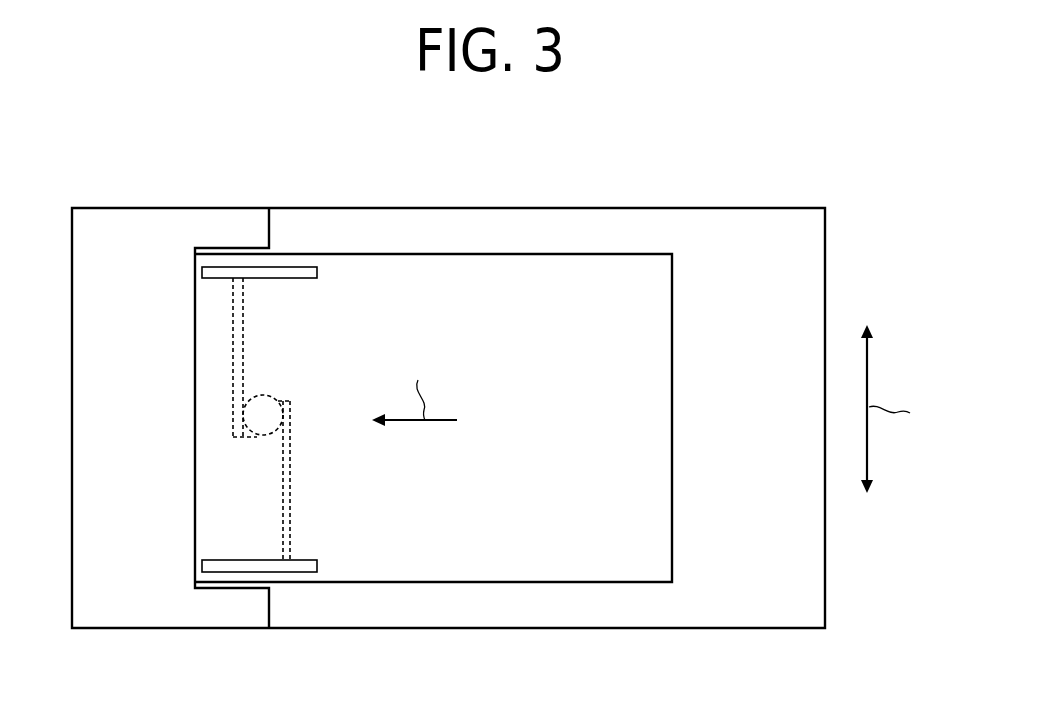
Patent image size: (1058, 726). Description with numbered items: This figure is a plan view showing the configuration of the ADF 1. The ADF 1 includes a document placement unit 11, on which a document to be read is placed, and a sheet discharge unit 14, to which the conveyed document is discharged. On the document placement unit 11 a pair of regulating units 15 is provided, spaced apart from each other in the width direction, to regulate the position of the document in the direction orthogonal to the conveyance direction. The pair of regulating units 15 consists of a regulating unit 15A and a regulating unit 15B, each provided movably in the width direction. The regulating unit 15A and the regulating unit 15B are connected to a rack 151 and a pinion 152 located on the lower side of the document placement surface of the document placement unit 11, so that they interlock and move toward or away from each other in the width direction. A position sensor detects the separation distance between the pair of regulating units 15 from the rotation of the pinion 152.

The ADF 1 is at (93, 175).
The document placement unit 11 is at (524, 562).
The sheet discharge unit 14 is at (705, 606).
The pair of regulating units 15 is at (316, 419).
The regulating unit 15A is at (318, 271).
The regulating unit 15B is at (318, 565).
The rack 151 is at (244, 322).
The pinion 152 is at (259, 436).